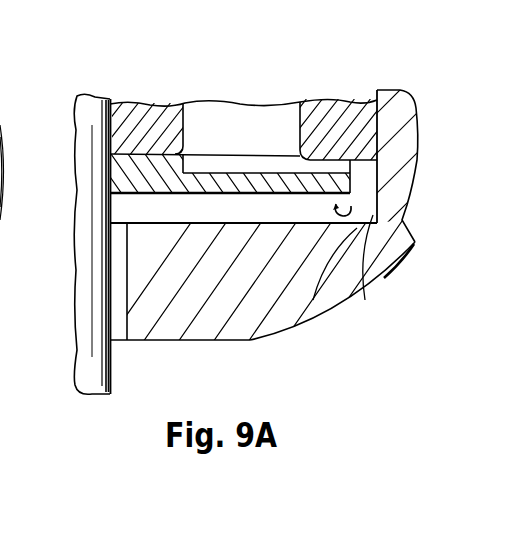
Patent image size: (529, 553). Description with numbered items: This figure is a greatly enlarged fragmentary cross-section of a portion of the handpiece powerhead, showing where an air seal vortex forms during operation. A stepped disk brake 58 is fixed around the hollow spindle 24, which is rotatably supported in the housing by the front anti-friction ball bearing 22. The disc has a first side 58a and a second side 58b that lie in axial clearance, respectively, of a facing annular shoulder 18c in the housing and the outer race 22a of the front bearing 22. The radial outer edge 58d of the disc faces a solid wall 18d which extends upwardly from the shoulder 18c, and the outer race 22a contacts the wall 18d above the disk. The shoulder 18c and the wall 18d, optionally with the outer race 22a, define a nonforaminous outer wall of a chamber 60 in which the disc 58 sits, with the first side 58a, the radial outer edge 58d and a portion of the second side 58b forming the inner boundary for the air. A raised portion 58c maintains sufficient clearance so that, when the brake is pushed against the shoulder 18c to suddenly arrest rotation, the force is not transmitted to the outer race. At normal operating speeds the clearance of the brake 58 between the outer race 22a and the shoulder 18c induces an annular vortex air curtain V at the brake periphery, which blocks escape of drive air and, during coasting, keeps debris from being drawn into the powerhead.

The annular shoulder 18c is at (235, 222).
The solid wall 18d is at (398, 250).
The front anti-friction ball bearing 22 is at (207, 115).
The outer race 22a is at (322, 112).
The hollow spindle 24 is at (83, 368).
The stepped disk brake 58 is at (140, 186).
The first side 58a is at (208, 193).
The second side 58b is at (310, 180).
The raised portion 58c is at (145, 153).
The radial outer edge 58d is at (379, 106).
The chamber 60 is at (365, 300).
The vortex air curtain V is at (313, 300).